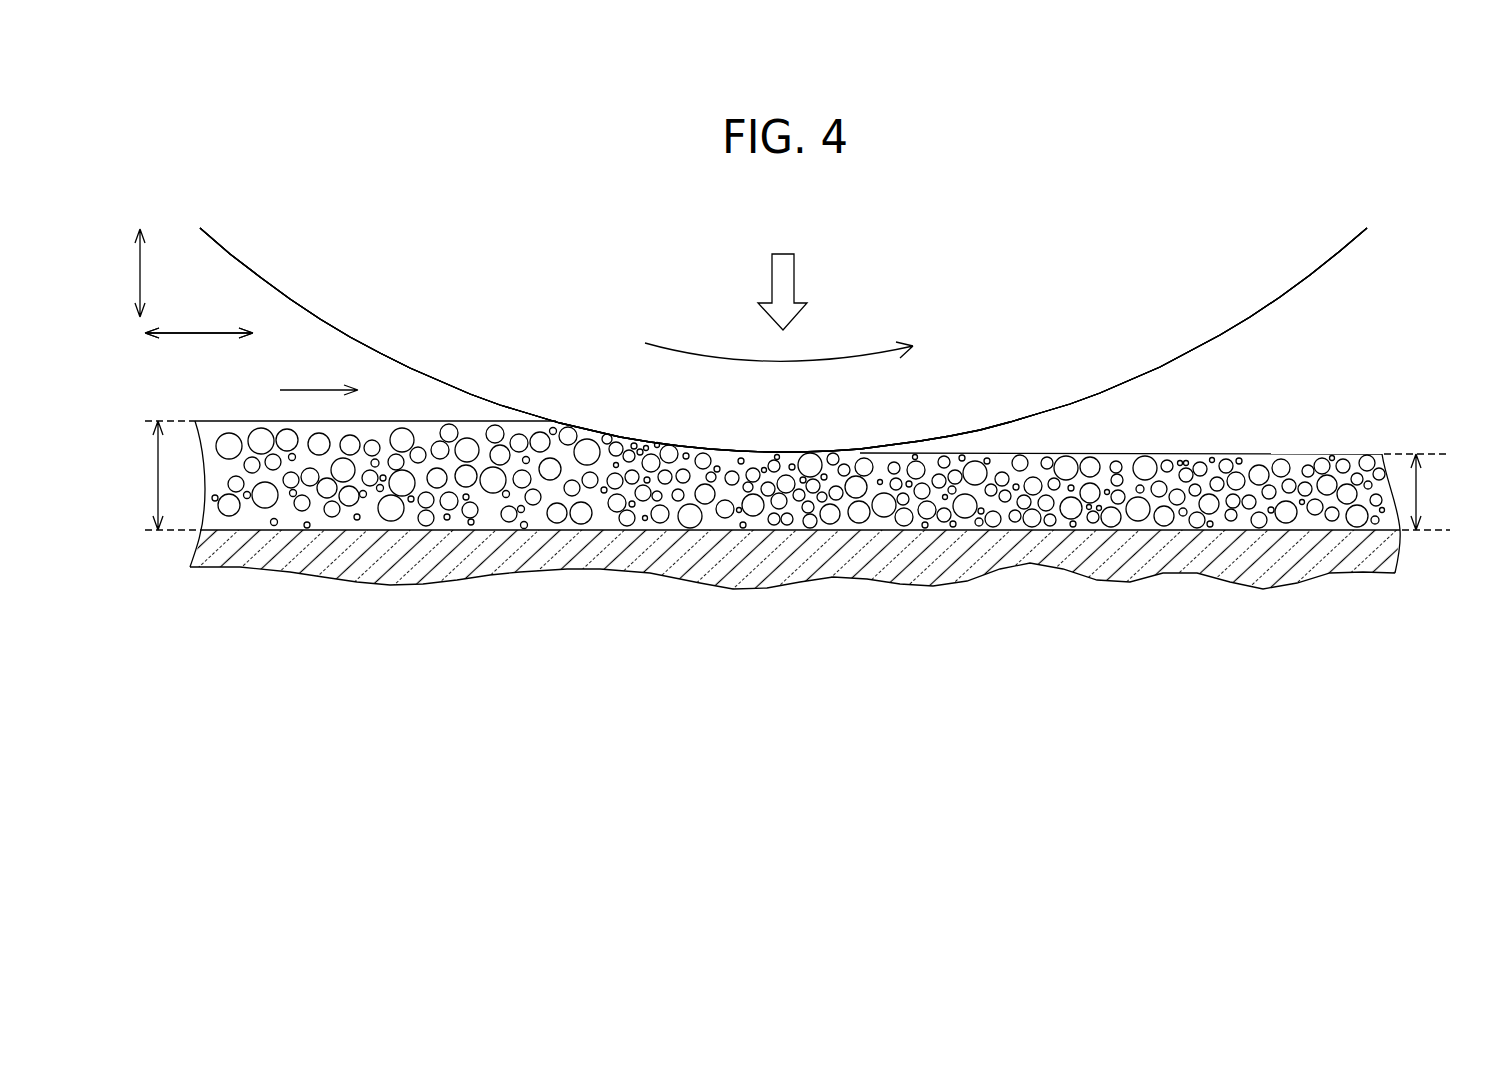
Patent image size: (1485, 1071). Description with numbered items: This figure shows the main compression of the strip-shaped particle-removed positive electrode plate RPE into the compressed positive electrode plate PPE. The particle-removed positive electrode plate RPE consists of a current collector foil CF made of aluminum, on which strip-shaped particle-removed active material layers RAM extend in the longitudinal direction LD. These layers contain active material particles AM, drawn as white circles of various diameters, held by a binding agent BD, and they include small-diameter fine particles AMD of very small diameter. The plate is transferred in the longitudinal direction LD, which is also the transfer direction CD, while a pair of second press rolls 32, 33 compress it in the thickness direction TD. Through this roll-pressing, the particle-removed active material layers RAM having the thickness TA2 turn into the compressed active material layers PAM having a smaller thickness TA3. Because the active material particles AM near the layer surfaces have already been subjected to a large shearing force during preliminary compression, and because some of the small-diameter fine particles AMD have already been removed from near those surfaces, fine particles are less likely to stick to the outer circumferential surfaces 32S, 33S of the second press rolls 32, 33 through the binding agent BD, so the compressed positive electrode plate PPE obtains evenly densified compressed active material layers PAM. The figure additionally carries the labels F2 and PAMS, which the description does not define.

The outer circumferential surface of second press roll 32S is at (1310, 279).
The outer circumferential surface of second press roll 33S is at (832, 340).
The second press roll 32 is at (1233, 308).
The second press roll 33 is at (789, 340).
The pressing force F2 is at (797, 281).
The thickness direction TD is at (122, 273).
The longitudinal direction LD is at (199, 353).
The transfer direction CD is at (199, 353).
The thickness of particle-removed active material layer TA2 is at (153, 475).
The thickness of compressed active material layer TA3 is at (1427, 492).
The positive electrode active material layer surface PAMS is at (1212, 452).
The small-diameter fine particles AMD is at (293, 497).
The active material particles AM is at (996, 564).
The binding agent BD is at (324, 505).
The current collector foil CF is at (364, 563).
The particle-removed active material layer RAM is at (452, 522).
The particle-removed positive electrode plate RPE is at (408, 580).
The compressed active material layer PAM is at (1275, 540).
The compressed positive electrode plate PPE is at (996, 582).